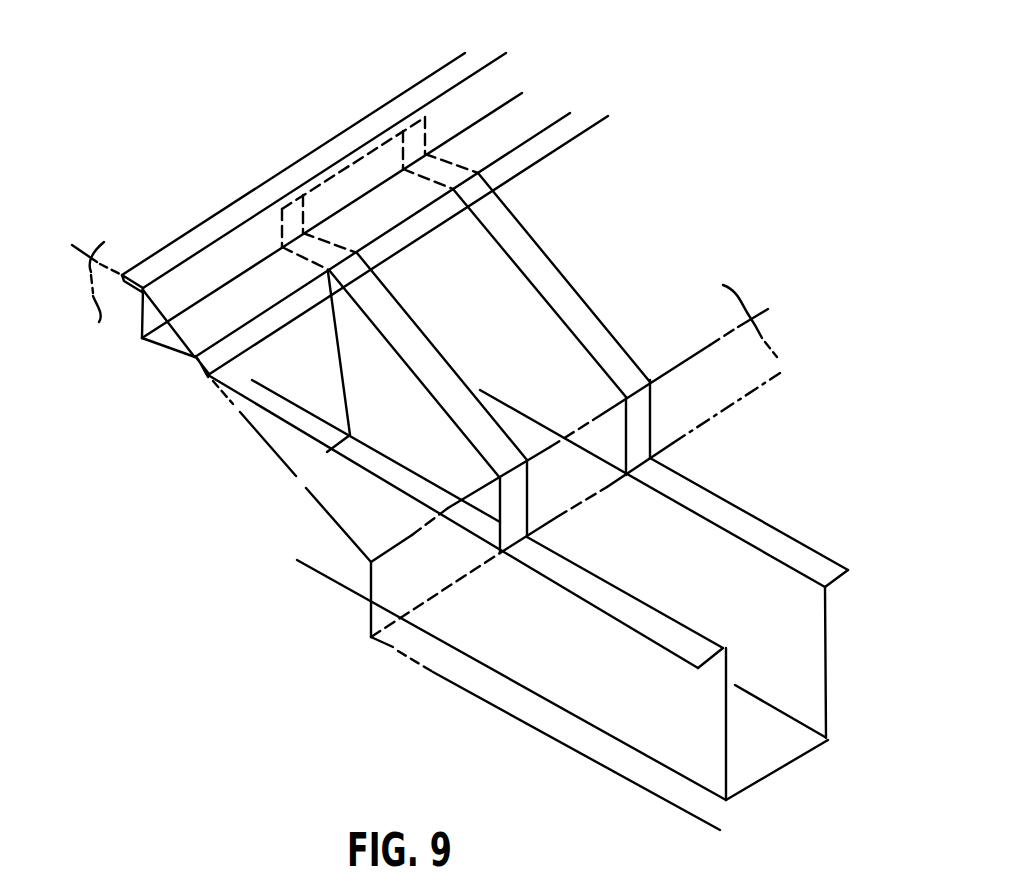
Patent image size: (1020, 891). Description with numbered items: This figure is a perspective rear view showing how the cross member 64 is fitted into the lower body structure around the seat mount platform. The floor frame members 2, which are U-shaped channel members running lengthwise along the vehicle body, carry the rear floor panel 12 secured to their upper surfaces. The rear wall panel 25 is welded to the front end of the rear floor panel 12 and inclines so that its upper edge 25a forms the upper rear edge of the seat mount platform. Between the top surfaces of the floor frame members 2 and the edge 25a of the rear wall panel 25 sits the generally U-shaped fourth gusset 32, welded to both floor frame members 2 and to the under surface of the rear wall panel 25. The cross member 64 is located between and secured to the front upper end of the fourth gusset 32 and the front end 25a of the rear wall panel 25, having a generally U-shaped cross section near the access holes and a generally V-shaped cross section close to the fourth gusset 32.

The floor frame member 2 is at (750, 512).
The rear floor panel 12 is at (525, 725).
The rear wall panel 25 is at (781, 362).
The upper edge of rear wall panel 25a is at (340, 215).
The fourth gusset 32 is at (570, 282).
The cross member 64 is at (360, 122).